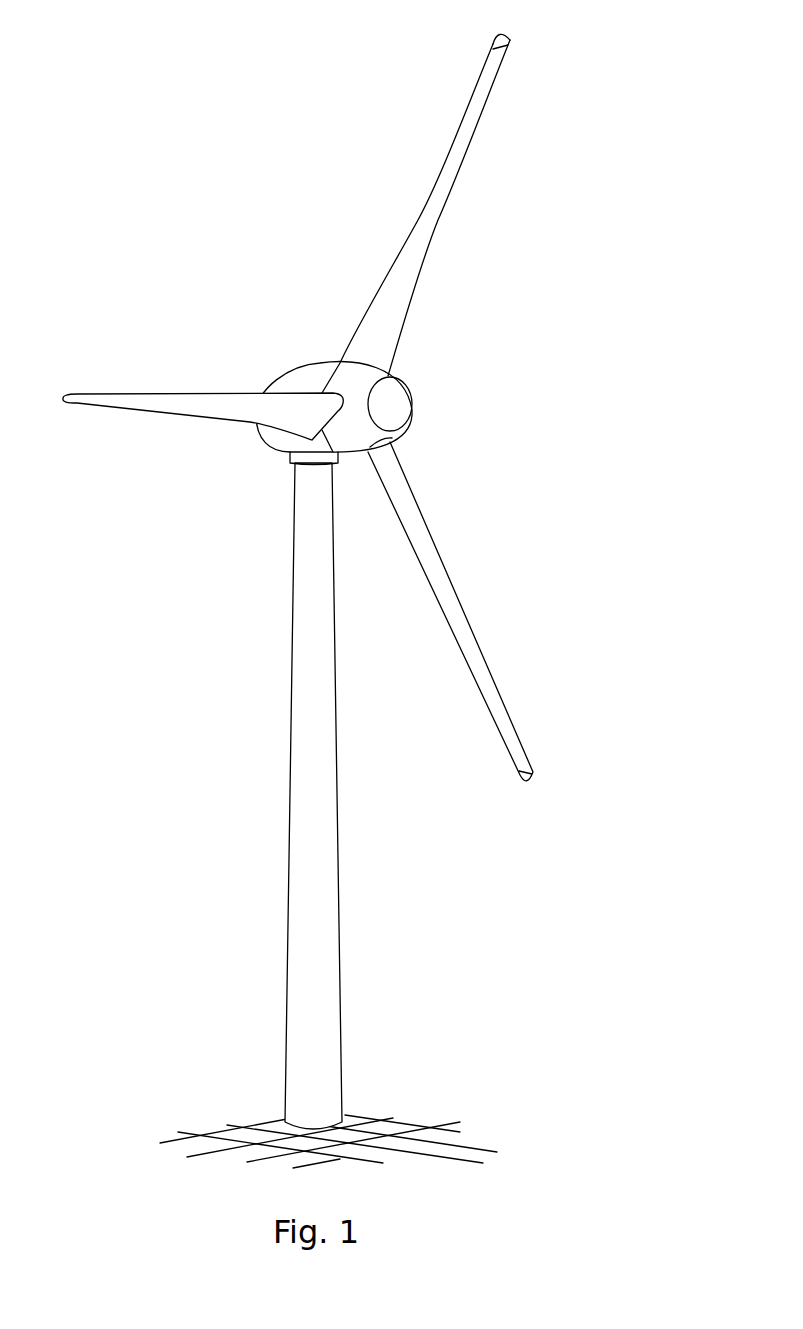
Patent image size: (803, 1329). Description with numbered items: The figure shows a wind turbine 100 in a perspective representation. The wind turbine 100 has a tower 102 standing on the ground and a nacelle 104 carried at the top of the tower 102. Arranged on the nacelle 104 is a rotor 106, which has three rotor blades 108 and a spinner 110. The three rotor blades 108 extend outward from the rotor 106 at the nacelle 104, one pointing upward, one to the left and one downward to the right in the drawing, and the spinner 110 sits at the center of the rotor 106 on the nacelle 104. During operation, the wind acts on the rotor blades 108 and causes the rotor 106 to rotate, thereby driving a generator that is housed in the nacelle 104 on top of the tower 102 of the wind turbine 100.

The wind turbine 100 is at (349, 601).
The tower 102 is at (320, 897).
The nacelle 104 is at (305, 376).
The rotor 106 is at (349, 407).
The rotor blades 108 is at (455, 160).
The spinner 110 is at (397, 405).